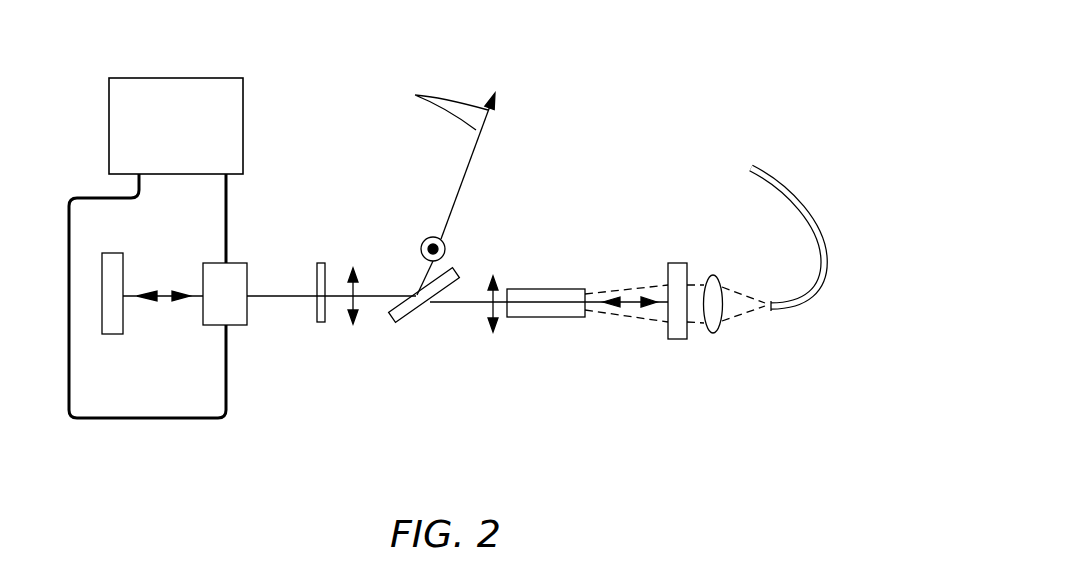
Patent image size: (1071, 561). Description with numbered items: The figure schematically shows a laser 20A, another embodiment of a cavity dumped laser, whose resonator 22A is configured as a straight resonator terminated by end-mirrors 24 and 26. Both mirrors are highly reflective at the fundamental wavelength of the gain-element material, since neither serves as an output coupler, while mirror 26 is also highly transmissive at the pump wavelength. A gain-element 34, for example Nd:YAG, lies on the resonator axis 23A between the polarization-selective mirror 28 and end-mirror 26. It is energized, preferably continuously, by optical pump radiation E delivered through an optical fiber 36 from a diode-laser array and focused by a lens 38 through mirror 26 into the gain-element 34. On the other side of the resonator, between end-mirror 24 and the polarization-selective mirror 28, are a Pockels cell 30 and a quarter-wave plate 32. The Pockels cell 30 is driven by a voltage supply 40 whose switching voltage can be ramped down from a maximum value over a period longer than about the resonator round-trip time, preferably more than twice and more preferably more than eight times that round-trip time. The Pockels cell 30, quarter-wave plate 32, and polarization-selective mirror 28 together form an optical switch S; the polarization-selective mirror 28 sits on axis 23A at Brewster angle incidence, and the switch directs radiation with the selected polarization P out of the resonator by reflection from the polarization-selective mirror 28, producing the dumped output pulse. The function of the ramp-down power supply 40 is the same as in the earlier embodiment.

The laser 20A is at (548, 458).
The resonator 22A is at (652, 278).
The resonator axis 23A is at (276, 296).
The end-mirror 24 is at (123, 318).
The end-mirror 26 is at (668, 325).
The polarization-selective mirror 28 is at (405, 317).
The Pockels cell 30 is at (232, 325).
The quarter-wave plate 32 is at (322, 322).
The gain-element 34 is at (522, 317).
The optical fiber 36 is at (810, 220).
The lens 38 is at (713, 275).
The voltage supply 40 is at (250, 88).
The switch pivot / output pulse S is at (422, 243).
The polarization direction P is at (497, 283).
The optical pump radiation E is at (737, 320).